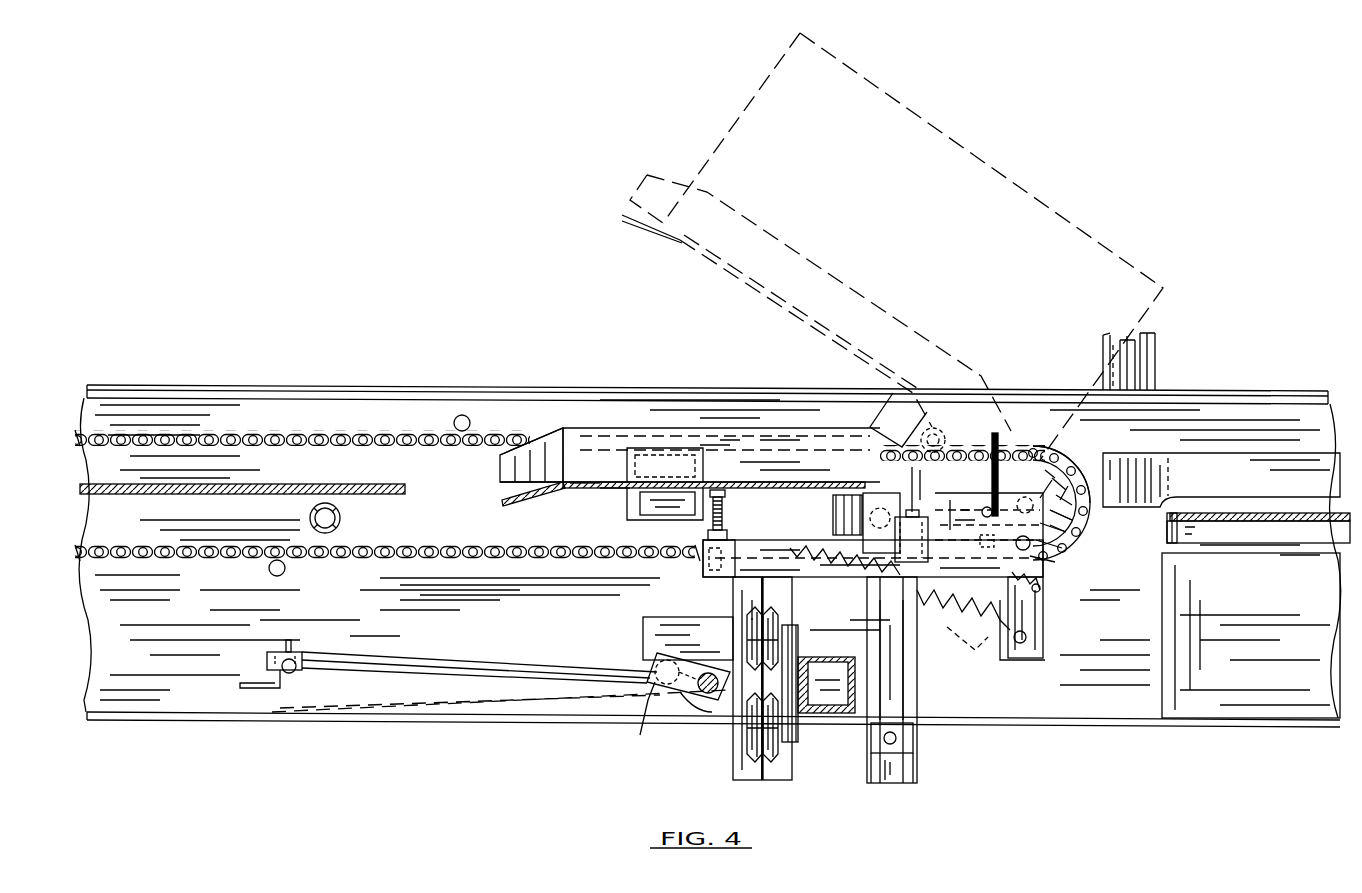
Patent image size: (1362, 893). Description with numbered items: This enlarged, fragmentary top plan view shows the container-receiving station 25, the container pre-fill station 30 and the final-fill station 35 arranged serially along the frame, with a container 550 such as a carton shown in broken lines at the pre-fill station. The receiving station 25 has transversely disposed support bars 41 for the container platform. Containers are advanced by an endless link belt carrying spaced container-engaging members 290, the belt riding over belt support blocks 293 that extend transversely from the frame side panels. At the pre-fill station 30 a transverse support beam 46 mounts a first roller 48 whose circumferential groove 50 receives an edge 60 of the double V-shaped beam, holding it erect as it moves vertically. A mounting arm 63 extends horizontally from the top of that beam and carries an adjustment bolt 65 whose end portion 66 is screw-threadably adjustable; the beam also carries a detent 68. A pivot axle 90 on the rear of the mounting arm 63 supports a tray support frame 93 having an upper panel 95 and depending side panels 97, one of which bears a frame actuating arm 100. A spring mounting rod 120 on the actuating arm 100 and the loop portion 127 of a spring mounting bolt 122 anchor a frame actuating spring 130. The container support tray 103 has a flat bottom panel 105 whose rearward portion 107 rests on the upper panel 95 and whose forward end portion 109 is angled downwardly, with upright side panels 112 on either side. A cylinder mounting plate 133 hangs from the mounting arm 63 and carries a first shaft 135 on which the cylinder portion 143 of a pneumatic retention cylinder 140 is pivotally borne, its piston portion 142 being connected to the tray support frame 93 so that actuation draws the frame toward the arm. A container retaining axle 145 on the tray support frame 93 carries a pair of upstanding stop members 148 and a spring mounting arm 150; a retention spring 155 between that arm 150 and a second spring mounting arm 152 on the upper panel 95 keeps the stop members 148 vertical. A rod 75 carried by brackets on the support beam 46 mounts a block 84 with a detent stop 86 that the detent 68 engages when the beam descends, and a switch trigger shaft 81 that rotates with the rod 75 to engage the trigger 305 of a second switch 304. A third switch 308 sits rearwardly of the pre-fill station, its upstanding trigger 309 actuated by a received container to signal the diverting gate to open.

The container 550 is at (760, 97).
The container pre-fill station 30 is at (585, 442).
The container-engaging members 290 is at (468, 415).
The container-receiving station 25 is at (268, 484).
The side panels 112 is at (503, 465).
The forward end portion 109 is at (512, 494).
The container support tray 103 is at (590, 488).
The bottom panel 105 is at (615, 490).
The support bars 41 is at (340, 516).
The belt support blocks 293 is at (655, 518).
The mounting arm 63 is at (703, 575).
The end portion 66 is at (718, 490).
The adjustment bolt 65 is at (722, 510).
The spring mounting bolt 122 is at (752, 540).
The third switch 308 is at (895, 530).
The trigger 309 is at (905, 475).
The rearward portion 107 is at (855, 484).
The loop portion 127 is at (822, 570).
The spring mounting arm 150 is at (975, 560).
The piston portion 142 is at (955, 585).
The stop members 148 is at (998, 445).
The upper panel 95 is at (1060, 460).
The container retaining axle 145 is at (1072, 520).
The tray support frame 93 is at (1066, 532).
The side panels 97 is at (1062, 548).
The pivot axle 90 is at (1055, 562).
The second spring mounting arm 152 is at (1040, 586).
The frame actuating arm 100 is at (1040, 608).
The retention spring 155 is at (1030, 624).
The frame actuating spring 130 is at (1015, 660).
The spring mounting rod 120 is at (1022, 645).
The final-fill station 35 is at (1218, 468).
The transversely opposite edges 60 is at (733, 587).
The circumferential groove 50 is at (770, 620).
The first roller 48 is at (748, 620).
The detent 68 is at (643, 627).
The transverse support beam 46 is at (815, 712).
The retention cylinder 140 is at (912, 691).
The cylinder portion 143 is at (898, 655).
The first shaft 135 is at (897, 740).
The cylinder mounting plate 133 is at (912, 770).
The detent stop 86 is at (650, 665).
The block 84 is at (648, 700).
The rod 75 is at (705, 693).
The switch trigger shaft 81 is at (415, 660).
The trigger 305 is at (292, 645).
The second switch 304 is at (296, 674).